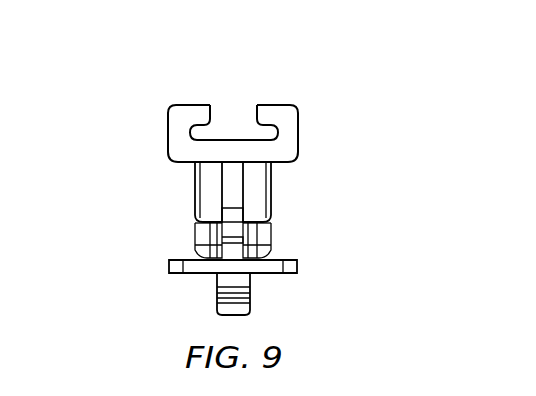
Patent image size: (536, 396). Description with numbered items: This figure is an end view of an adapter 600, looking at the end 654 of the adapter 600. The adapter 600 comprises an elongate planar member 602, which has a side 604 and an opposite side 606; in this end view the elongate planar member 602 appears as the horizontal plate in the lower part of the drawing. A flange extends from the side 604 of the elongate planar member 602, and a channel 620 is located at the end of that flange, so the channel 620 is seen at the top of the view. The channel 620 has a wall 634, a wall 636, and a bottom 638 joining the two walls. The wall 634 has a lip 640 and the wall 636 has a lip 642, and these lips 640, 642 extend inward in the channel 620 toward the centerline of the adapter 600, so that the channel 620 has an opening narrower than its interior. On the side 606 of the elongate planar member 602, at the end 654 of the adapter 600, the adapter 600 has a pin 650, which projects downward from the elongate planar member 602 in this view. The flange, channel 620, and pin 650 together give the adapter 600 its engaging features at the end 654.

The adapter 600 is at (225, 180).
The elongate planar member 602 is at (287, 258).
The side 604 is at (182, 258).
The side 606 is at (187, 275).
The channel 620 is at (232, 97).
The wall 634 is at (298, 135).
The wall 636 is at (168, 135).
The bottom 638 is at (228, 137).
The lip 640 is at (184, 105).
The lip 642 is at (275, 105).
The pin 650 is at (218, 300).
The end 654 is at (272, 267).